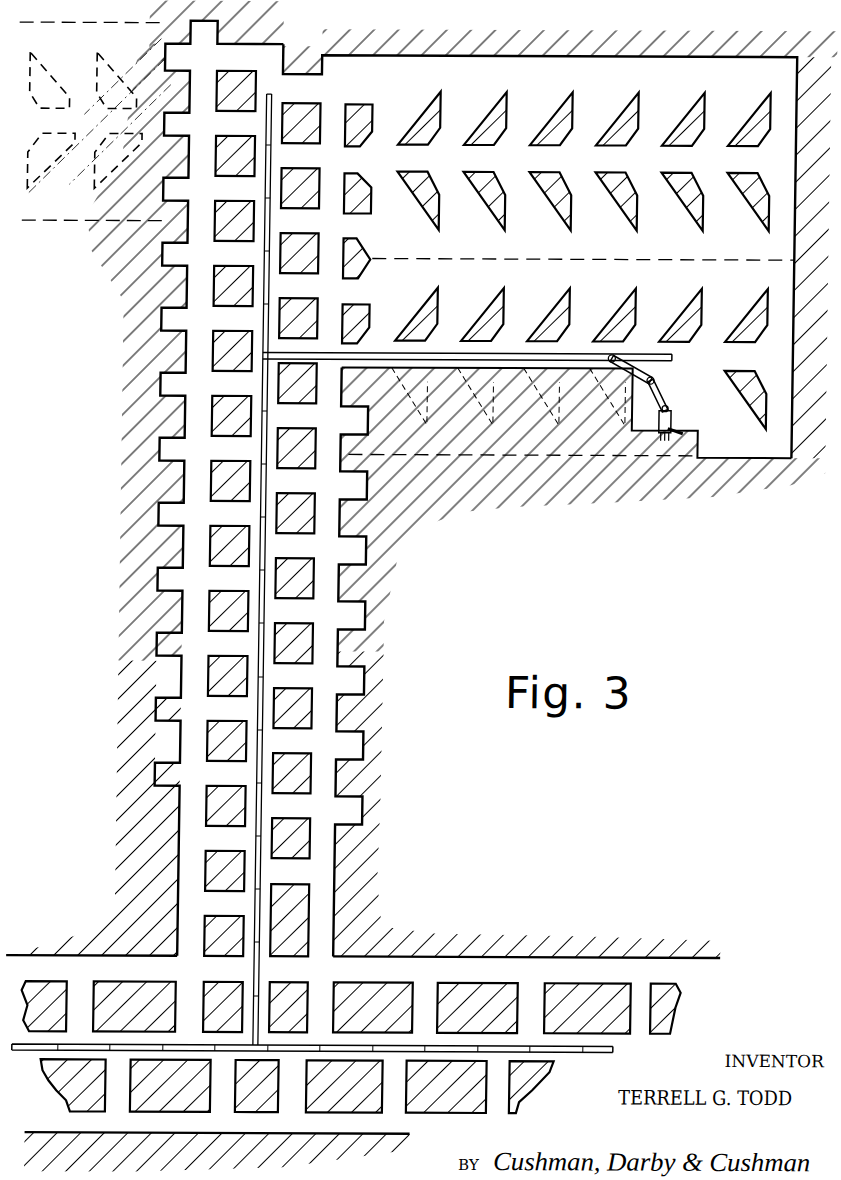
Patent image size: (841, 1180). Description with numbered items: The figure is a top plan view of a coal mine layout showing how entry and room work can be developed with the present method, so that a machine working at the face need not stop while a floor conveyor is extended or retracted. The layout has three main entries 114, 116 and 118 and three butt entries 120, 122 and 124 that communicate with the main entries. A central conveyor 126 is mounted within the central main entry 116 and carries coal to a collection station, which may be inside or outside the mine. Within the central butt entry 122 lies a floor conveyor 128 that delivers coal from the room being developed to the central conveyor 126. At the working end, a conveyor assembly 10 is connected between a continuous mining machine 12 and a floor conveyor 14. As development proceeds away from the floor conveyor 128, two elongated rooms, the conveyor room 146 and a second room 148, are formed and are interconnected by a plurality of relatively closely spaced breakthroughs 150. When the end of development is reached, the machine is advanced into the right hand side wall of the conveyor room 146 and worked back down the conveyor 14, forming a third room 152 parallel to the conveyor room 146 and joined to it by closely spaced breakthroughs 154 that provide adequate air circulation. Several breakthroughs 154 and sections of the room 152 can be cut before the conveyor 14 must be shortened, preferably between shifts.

The conveyor assembly 10 is at (657, 370).
The continuous mining machine 12 is at (685, 430).
The floor conveyor 14 is at (375, 347).
The main entry 114 is at (476, 955).
The central main entry 116 is at (494, 1031).
The main entry 118 is at (230, 1132).
The butt entry 120 is at (190, 851).
The central butt entry 122 is at (286, 835).
The butt entry 124 is at (348, 865).
The central conveyor 126 is at (316, 1051).
The floor conveyor 128 is at (278, 702).
The conveyor room 146 is at (501, 168).
The elongated room 148 is at (613, 83).
The breakthroughs 150 is at (472, 121).
The third room 152 is at (619, 251).
The breakthroughs 154 is at (540, 211).